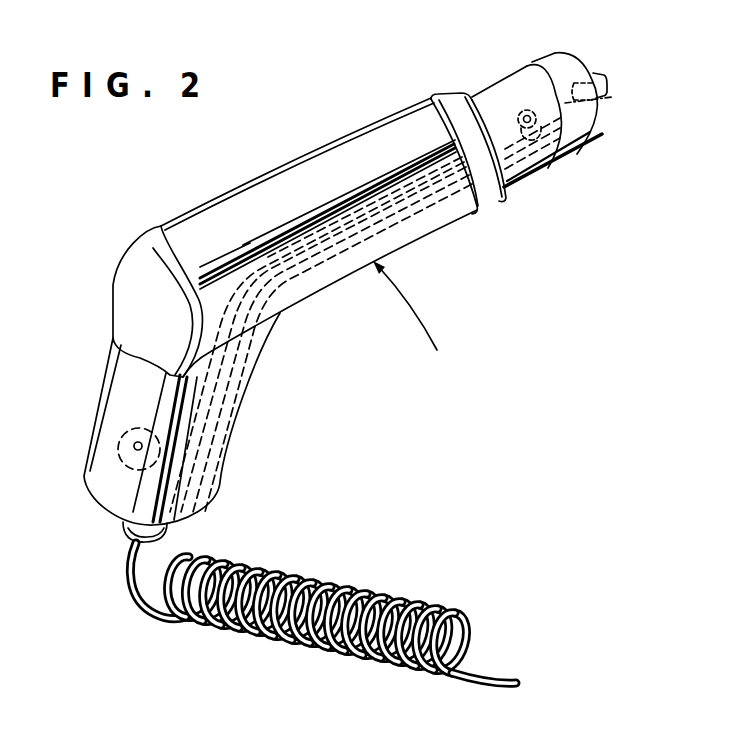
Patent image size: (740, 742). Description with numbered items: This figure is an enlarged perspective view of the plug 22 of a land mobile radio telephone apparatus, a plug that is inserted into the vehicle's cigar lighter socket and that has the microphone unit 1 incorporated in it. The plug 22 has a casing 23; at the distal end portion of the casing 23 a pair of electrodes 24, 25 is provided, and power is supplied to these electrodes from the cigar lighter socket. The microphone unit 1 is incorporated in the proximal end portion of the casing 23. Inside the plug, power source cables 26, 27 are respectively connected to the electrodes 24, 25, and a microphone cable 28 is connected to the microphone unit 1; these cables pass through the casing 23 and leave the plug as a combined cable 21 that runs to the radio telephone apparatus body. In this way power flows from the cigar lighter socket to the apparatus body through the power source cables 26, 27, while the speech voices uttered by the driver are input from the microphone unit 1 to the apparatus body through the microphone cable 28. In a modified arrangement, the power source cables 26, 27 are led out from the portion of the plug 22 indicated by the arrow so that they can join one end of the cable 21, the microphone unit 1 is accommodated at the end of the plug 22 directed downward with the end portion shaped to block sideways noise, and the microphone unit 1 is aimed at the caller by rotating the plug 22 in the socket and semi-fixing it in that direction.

The plug 22 is at (347, 139).
The casing 23 is at (243, 190).
The electrode 24 is at (607, 89).
The electrode 25 is at (525, 108).
The power source cable 26 is at (387, 233).
The power source cable 27 is at (329, 248).
The microphone cable 28 is at (150, 484).
The microphone unit 1 is at (132, 442).
The cable 21 is at (330, 583).